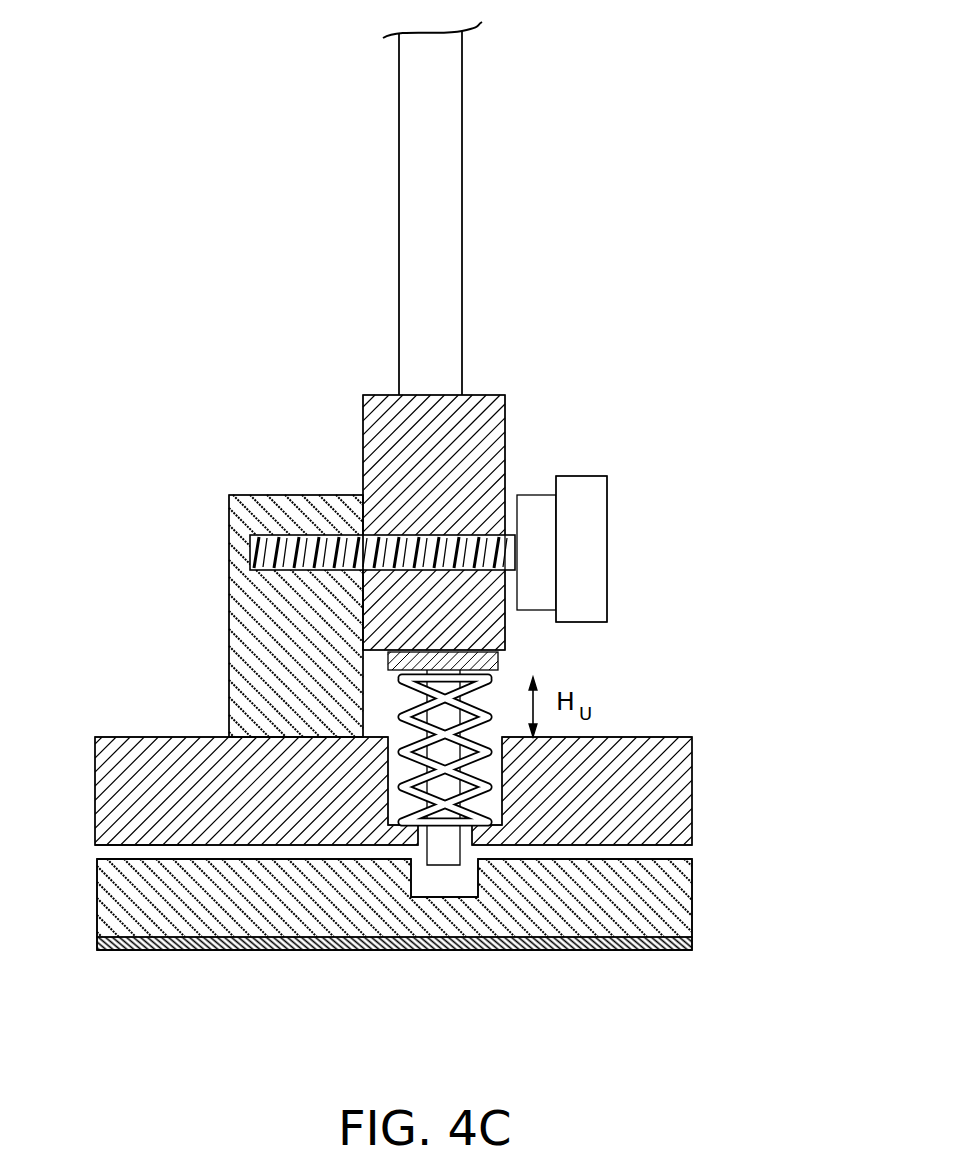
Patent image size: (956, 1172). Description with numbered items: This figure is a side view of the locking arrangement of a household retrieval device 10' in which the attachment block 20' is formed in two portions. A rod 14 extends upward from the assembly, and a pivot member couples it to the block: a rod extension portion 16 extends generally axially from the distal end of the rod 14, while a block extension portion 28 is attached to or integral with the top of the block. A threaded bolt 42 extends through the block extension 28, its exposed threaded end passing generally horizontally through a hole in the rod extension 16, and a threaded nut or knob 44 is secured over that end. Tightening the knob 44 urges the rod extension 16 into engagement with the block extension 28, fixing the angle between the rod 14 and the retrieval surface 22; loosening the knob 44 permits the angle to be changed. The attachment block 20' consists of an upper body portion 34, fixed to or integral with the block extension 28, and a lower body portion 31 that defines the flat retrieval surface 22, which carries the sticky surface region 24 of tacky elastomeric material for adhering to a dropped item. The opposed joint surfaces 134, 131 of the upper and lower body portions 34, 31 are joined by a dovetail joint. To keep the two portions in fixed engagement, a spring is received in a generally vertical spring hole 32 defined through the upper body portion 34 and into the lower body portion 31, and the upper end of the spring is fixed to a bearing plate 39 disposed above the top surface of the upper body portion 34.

The household retrieval device 10' is at (448, 490).
The rod 14 is at (399, 241).
The rod extension portion 16 is at (363, 428).
The block extension portion 28 is at (229, 627).
The threaded bolt 42 is at (440, 540).
The knob 44 is at (607, 512).
The bearing plate 39 is at (498, 653).
The spring hole 32 is at (458, 883).
The upper body portion 34 is at (692, 789).
The lower body portion 31 is at (692, 910).
The joint surface of lower body portion 131 is at (117, 858).
The joint surface of upper body portion 134 is at (143, 845).
The retrieval surface 22 is at (113, 950).
The sticky surface region 24 is at (218, 950).
The attachment block 20' is at (478, 832).